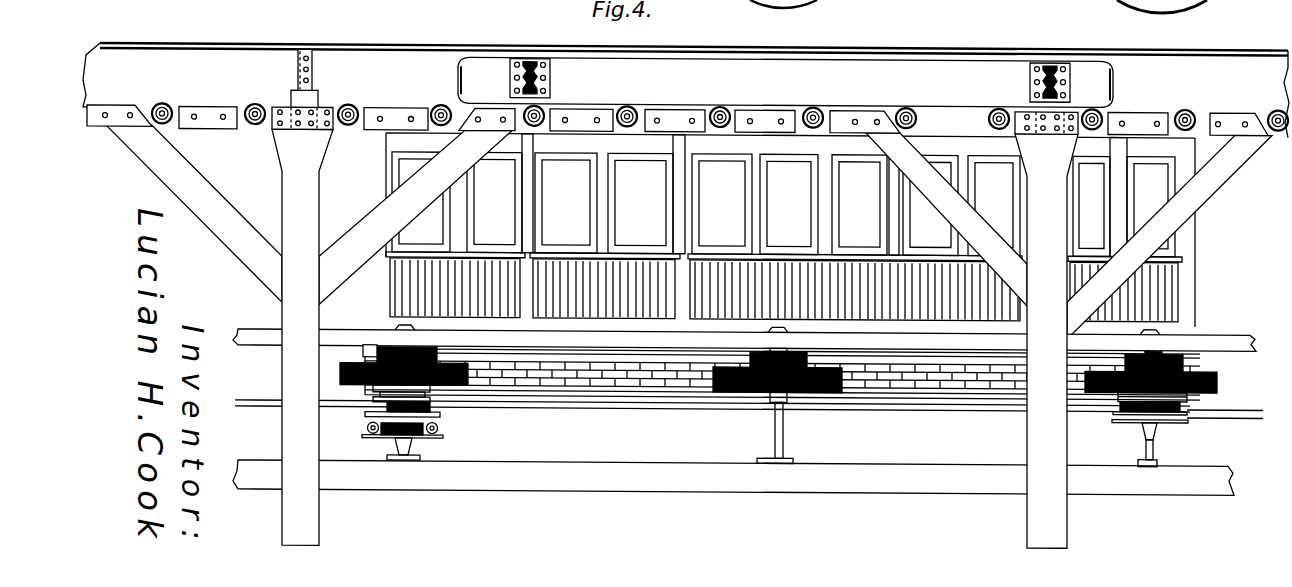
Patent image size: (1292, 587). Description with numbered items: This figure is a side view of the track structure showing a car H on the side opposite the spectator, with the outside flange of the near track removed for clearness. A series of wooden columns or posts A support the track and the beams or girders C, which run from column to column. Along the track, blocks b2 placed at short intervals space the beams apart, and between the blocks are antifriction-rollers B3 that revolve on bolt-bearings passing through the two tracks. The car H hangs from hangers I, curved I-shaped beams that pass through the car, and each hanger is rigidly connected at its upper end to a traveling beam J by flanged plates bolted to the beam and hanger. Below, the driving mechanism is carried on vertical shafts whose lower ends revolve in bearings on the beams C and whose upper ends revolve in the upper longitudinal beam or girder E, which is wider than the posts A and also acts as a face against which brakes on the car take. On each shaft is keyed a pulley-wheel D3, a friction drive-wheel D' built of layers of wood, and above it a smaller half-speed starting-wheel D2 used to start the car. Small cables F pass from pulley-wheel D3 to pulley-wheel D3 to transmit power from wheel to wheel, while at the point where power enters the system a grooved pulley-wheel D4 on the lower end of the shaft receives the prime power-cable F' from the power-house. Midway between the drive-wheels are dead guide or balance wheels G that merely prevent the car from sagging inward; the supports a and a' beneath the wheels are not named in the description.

The columns or posts A is at (675, 299).
The antifriction-rollers B3 is at (340, 105).
The blocks b2 is at (205, 112).
The beams or girders C is at (733, 480).
The drive-wheel D' is at (784, 370).
The starting-wheel D2 is at (1183, 362).
The pulley-wheel D3 is at (780, 408).
The grooved pulley-wheel D4 is at (390, 425).
The upper longitudinal beam or girder E is at (256, 330).
The small cables F is at (749, 414).
The prime power-cable F' is at (821, 425).
The guide or balance wheels G is at (796, 396).
The car H is at (744, 294).
The hangers I is at (550, 81).
The traveling beam J is at (785, 82).
The rail support a is at (1155, 446).
The rail support foot a' is at (413, 449).